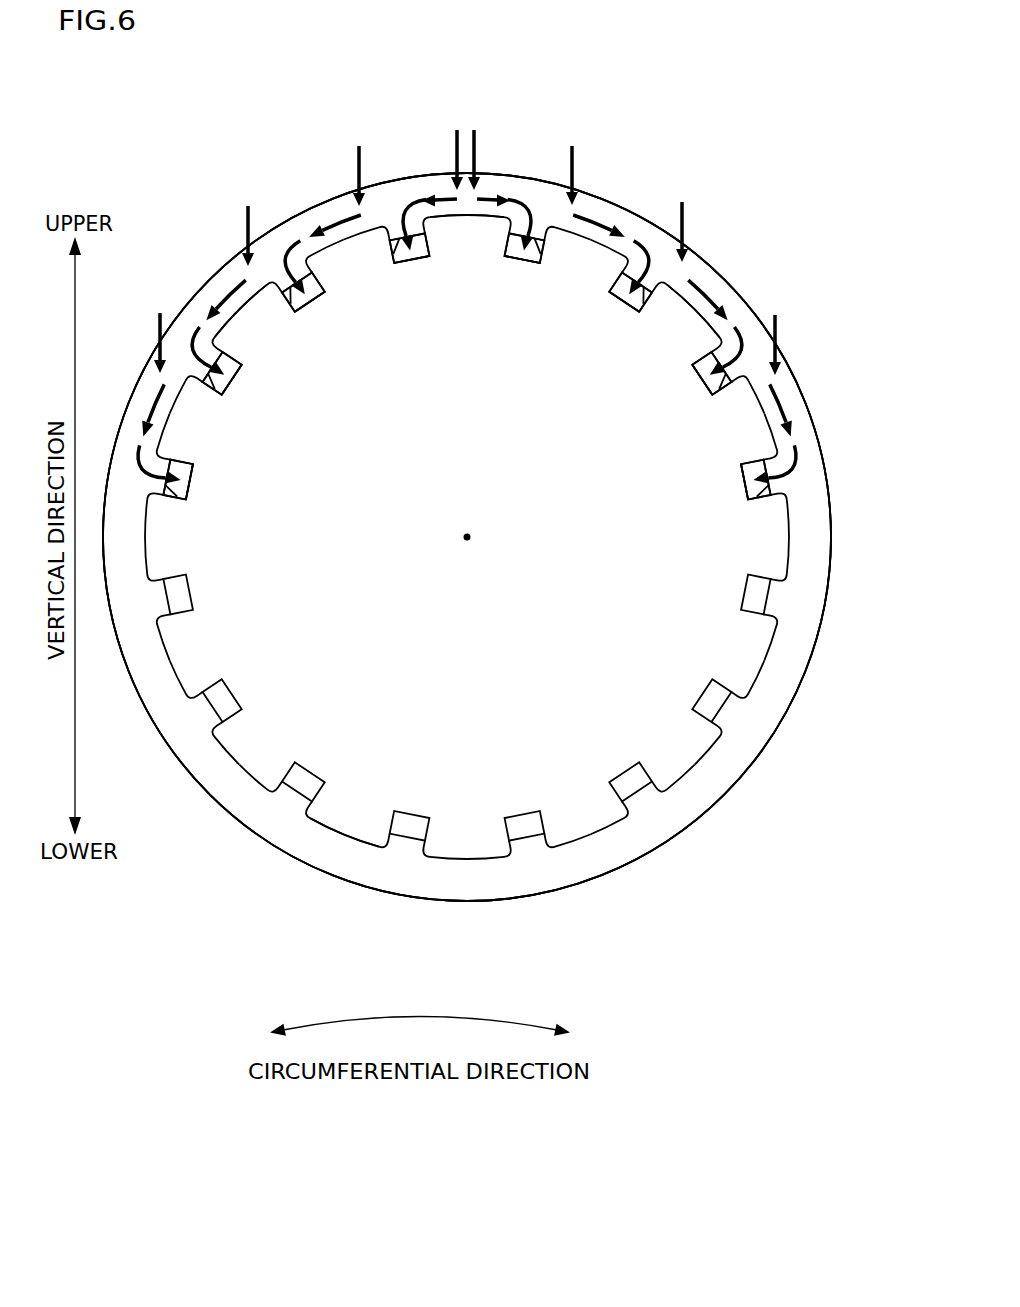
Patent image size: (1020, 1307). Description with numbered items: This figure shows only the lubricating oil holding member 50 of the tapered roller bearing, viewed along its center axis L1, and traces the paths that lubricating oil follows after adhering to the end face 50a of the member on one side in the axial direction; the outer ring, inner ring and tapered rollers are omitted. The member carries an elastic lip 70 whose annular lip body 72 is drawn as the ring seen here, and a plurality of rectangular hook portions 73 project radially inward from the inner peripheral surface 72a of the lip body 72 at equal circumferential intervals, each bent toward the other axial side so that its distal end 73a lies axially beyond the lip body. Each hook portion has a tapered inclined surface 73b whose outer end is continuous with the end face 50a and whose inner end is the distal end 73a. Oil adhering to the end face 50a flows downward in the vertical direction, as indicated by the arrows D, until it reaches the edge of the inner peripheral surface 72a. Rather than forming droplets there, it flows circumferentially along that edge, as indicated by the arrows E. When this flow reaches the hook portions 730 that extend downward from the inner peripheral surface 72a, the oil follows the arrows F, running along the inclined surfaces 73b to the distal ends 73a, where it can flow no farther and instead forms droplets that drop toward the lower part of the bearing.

The lubricating oil holding member 50 is at (656, 907).
The end face of the lubricating oil holding member 50a is at (788, 662).
The lip 70 is at (498, 894).
The lip body 72 is at (705, 768).
The inner peripheral surface of the lip body 72a is at (451, 214).
The hook portion 73 is at (196, 591).
The hook portion extending downward in the vertical direction 730 is at (466, 366).
The distal end of the hook portion 73a is at (516, 262).
The inclined surface 73b is at (314, 287).
The center axis L1 is at (467, 545).
The arrows D is at (359, 143).
The arrows E is at (437, 194).
The arrows F is at (413, 203).